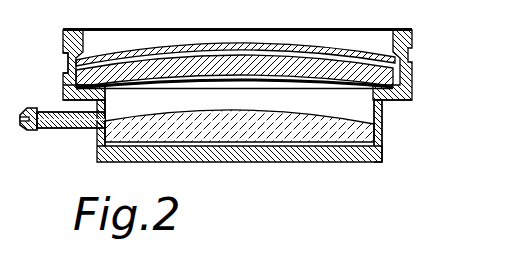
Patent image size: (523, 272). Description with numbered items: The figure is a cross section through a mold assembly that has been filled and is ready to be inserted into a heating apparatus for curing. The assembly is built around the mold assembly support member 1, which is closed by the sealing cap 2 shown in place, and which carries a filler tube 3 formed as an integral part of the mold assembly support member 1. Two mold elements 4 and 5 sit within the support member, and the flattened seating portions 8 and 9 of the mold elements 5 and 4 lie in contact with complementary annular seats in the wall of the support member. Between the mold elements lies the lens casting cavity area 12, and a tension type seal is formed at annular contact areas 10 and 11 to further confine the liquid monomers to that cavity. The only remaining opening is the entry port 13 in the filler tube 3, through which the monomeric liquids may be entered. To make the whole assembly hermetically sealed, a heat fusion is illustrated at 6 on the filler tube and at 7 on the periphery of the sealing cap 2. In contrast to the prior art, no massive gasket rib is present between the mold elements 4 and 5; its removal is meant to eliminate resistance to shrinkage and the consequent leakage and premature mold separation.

The mold assembly support member 1 is at (251, 166).
The sealing cap 2 is at (367, 52).
The filler tube 3 is at (62, 146).
The mold element 4 is at (383, 117).
The mold element 5 is at (392, 106).
The heat fusion 6 is at (35, 133).
The heat fusion 7 is at (62, 54).
The flattened seating portion 8 is at (405, 78).
The flattened seating portion 9 is at (358, 164).
The annular contact area 10 is at (72, 90).
The annular contact area 11 is at (97, 147).
The lens casting cavity area 12 is at (147, 165).
The entry port 13 is at (141, 123).